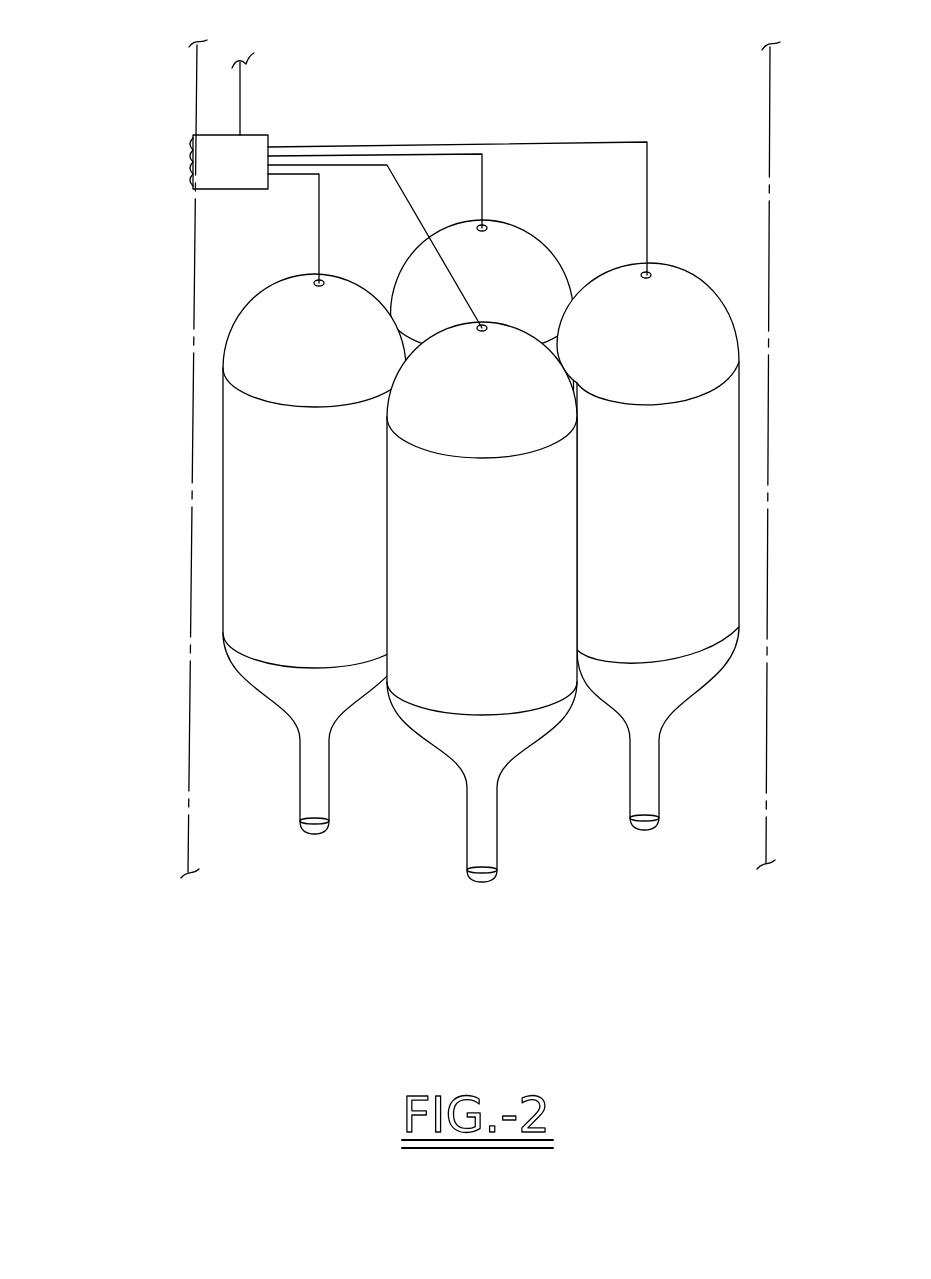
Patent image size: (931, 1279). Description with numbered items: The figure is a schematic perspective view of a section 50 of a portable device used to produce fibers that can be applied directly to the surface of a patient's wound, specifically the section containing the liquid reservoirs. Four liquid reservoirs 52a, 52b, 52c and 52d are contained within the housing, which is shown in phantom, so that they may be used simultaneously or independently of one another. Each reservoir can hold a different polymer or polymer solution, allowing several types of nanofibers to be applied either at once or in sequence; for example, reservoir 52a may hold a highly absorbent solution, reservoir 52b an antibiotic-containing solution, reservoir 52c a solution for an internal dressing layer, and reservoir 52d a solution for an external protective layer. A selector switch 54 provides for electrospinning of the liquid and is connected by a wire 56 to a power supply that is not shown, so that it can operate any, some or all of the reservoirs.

The section 50 is at (453, 557).
The liquid reservoir 52a is at (222, 432).
The liquid reservoir 52b is at (500, 698).
The liquid reservoir 52c is at (741, 447).
The liquid reservoir 52d is at (537, 237).
The selector switch 54 is at (249, 178).
The wire 56 is at (242, 101).